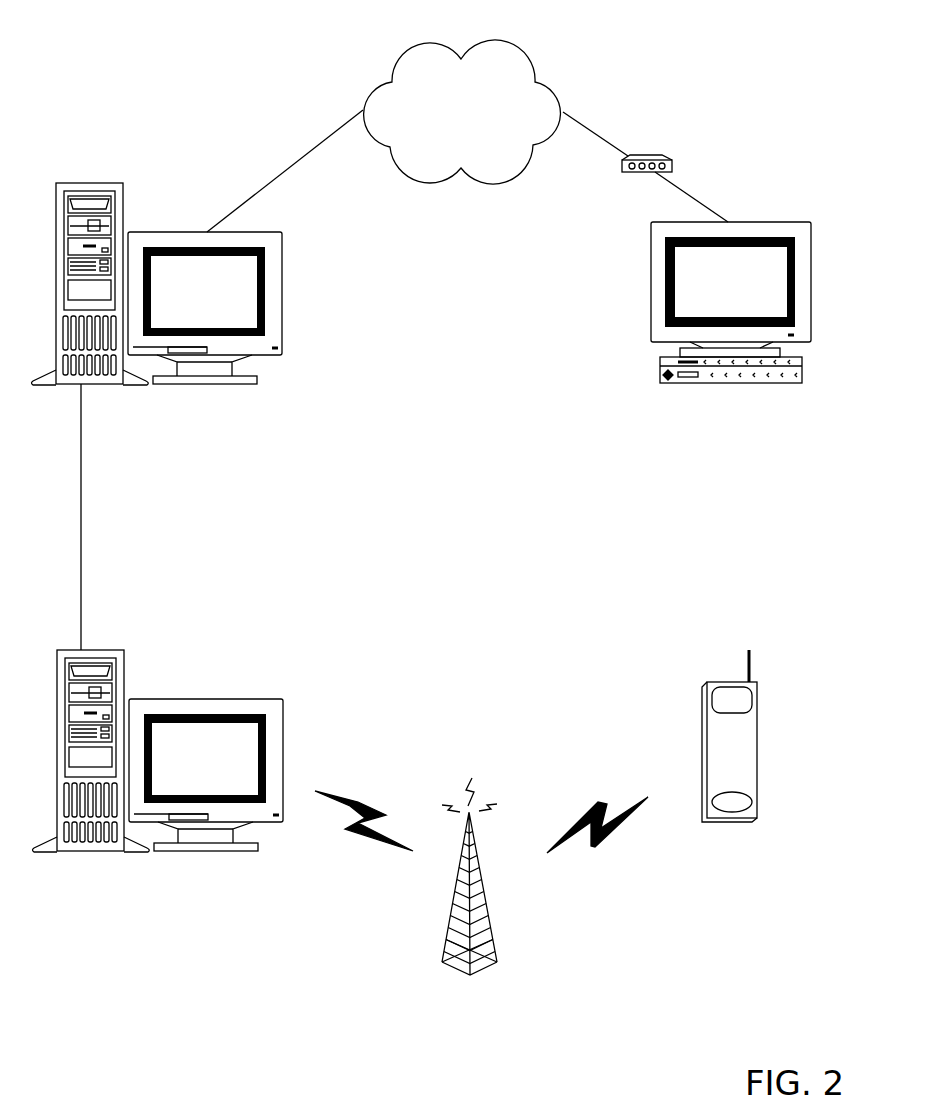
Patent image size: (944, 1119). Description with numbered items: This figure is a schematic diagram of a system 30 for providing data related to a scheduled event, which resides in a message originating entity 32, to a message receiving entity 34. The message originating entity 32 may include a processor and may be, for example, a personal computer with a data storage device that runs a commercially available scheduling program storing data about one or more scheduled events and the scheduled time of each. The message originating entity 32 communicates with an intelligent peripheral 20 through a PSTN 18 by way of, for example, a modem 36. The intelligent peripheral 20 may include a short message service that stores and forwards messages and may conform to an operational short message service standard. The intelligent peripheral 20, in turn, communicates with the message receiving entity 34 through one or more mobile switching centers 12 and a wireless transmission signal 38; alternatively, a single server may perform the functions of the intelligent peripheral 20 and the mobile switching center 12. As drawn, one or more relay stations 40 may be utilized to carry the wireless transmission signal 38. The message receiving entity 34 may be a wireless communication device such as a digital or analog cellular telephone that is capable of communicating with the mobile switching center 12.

The mobile switching center 12 is at (233, 698).
The PSTN 18 is at (553, 85).
The intelligent peripheral 20 is at (280, 278).
The system 30 is at (794, 67).
The message originating entity 32 is at (811, 245).
The message receiving entity 34 is at (757, 747).
The modem 36 is at (672, 160).
The wireless transmission signal 38 is at (357, 803).
The relay station 40 is at (497, 962).